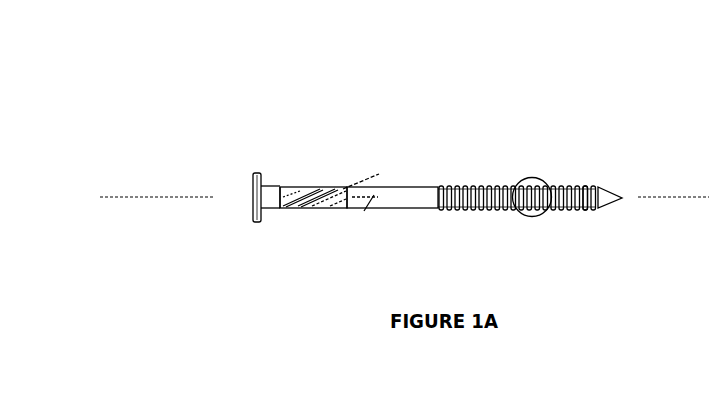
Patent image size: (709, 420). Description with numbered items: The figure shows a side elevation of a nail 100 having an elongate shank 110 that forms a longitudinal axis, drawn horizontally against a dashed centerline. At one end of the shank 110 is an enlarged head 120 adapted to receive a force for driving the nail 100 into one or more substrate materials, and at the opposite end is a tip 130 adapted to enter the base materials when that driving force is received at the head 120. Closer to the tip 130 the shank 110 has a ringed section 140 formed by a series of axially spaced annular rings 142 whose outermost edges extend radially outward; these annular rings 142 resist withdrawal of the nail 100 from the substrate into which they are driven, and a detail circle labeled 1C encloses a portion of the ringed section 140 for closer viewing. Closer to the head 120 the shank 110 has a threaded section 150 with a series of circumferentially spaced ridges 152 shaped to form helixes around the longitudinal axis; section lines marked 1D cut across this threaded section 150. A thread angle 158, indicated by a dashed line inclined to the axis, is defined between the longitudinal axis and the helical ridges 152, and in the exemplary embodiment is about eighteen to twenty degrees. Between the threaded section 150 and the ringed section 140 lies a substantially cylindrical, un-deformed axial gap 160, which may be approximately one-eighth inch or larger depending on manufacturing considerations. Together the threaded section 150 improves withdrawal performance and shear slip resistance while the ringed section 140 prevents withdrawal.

The nail 100 is at (193, 105).
The elongate shank 110 is at (442, 156).
The enlarged head 120 is at (253, 208).
The tip 130 is at (610, 203).
The ringed section 140 is at (517, 229).
The annular rings 142 is at (595, 176).
The threaded section 150 is at (312, 229).
The ridges 152 is at (283, 175).
The thread angle 158 is at (376, 174).
The axial gap 160 is at (392, 229).
The detail circle 1C is at (543, 171).
The section line 1D is at (326, 197).